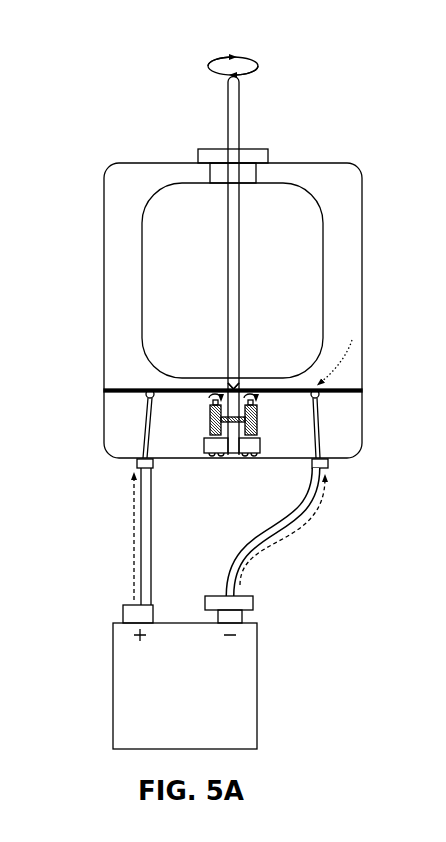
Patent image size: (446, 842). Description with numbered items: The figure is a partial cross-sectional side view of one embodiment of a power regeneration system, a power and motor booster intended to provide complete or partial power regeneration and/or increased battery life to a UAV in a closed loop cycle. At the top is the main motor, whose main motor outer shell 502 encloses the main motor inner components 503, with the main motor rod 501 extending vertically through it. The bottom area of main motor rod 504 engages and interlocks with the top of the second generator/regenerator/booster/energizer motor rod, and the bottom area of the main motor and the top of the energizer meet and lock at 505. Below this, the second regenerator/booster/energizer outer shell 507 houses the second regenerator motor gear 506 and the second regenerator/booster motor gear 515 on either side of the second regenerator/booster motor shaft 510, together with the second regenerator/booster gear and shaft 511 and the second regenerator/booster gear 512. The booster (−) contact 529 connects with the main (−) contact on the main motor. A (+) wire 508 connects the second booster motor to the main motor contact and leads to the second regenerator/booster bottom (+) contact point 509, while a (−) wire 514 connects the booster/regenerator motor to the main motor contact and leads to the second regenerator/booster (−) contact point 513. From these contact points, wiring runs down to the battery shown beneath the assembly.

The main motor rod 501 is at (228, 138).
The main motor outer shell 502 is at (104, 204).
The main motor inner components 503 is at (120, 238).
The bottom area of main motor rod 504 is at (233, 385).
The meeting/locking area of main motor bottom and energizer top 505 is at (104, 389).
The second regenerator motor gear 506 is at (210, 415).
The second regenerator/booster/energizer outer shell 507 is at (104, 440).
The (+) wire 508 is at (145, 428).
The second regenerator/booster bottom (+) contact point 509 is at (137, 463).
The second regenerator/booster motor shaft 510 is at (212, 456).
The second regenerator/booster gear and shaft 511 is at (234, 455).
The second regenerator/booster gear 512 is at (250, 456).
The second regenerator/booster (−) contact point 513 is at (330, 463).
The (−) wire 514 is at (320, 432).
The second regenerator/booster motor gear 515 is at (257, 415).
The booster (−) contact 529 is at (354, 349).